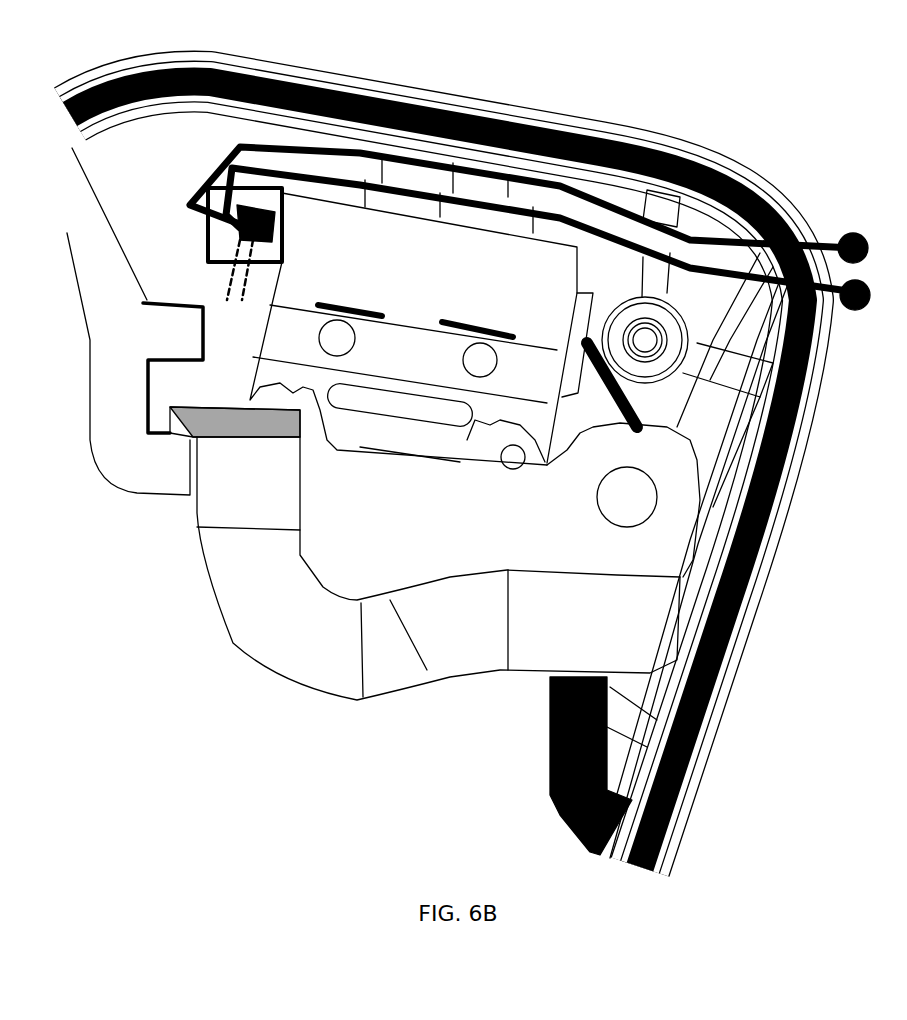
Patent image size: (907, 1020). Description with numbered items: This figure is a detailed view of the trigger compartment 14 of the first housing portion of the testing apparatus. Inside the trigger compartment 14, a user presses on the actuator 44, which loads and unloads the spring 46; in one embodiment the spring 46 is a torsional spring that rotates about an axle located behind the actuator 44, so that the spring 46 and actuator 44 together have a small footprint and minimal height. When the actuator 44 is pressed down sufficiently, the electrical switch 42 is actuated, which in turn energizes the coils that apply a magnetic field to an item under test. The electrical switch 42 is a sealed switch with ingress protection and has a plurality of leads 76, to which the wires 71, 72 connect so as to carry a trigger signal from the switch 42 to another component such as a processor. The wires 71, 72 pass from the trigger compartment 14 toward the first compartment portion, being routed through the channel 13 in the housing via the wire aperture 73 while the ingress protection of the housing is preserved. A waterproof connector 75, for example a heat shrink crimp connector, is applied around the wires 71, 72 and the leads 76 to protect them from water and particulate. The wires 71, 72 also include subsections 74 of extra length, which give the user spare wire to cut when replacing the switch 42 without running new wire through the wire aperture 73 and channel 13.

The channel 13 is at (735, 633).
The trigger compartment 14 is at (733, 680).
The electrical switch 42 is at (443, 331).
The actuator 44 is at (435, 553).
The spring 46 is at (797, 467).
The wire 71 is at (852, 233).
The wire 72 is at (856, 311).
The wire aperture 73 is at (830, 270).
The subsections of extra length 74 is at (493, 210).
The waterproof connector 75 is at (207, 243).
The leads 76 is at (232, 290).